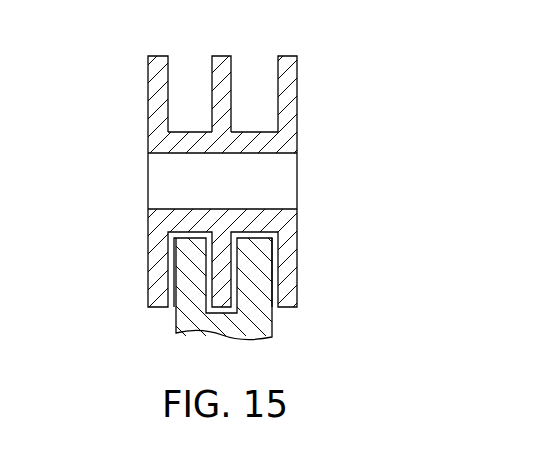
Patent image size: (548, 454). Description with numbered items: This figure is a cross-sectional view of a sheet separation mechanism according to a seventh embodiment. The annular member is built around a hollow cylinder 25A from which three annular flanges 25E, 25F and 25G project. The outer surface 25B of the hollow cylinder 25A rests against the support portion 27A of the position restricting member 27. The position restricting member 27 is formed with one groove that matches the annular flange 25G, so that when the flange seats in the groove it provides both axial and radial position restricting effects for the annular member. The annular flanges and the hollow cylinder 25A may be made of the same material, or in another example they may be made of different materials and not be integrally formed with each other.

The hollow cylinder 25A is at (257, 132).
The outer surface 25B is at (314, 244).
The annular flange 25E is at (297, 75).
The annular flange 25F is at (148, 67).
The annular flange 25G is at (213, 57).
The position restricting member 27 is at (177, 333).
The support portion 27A is at (245, 234).